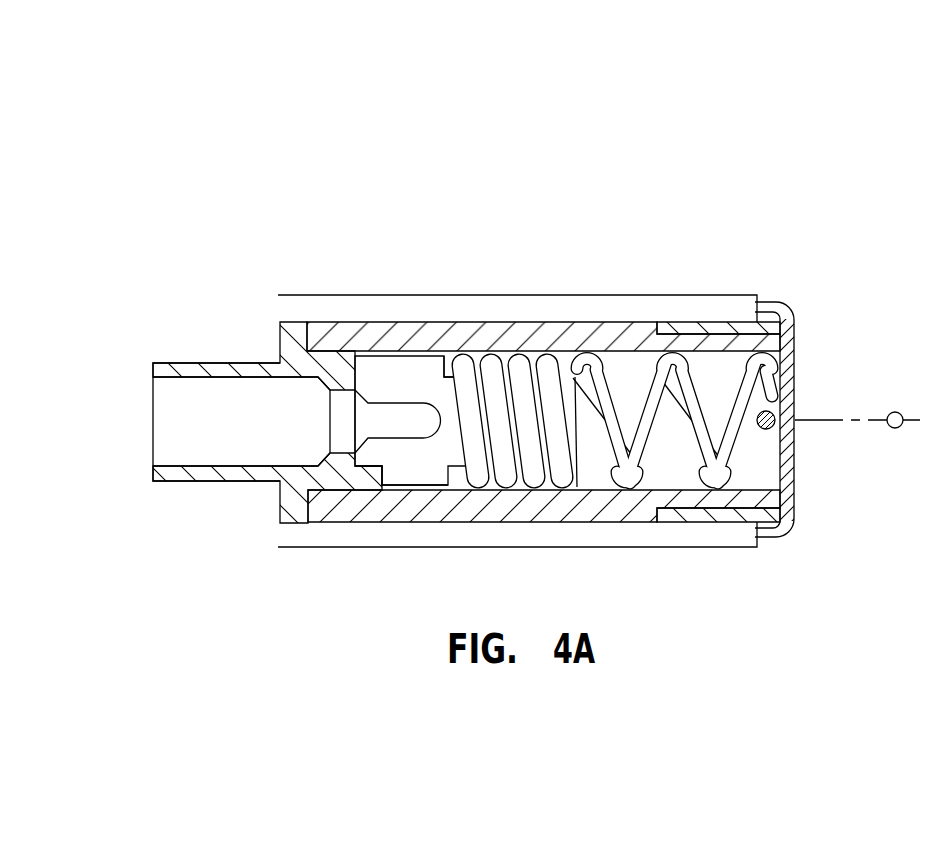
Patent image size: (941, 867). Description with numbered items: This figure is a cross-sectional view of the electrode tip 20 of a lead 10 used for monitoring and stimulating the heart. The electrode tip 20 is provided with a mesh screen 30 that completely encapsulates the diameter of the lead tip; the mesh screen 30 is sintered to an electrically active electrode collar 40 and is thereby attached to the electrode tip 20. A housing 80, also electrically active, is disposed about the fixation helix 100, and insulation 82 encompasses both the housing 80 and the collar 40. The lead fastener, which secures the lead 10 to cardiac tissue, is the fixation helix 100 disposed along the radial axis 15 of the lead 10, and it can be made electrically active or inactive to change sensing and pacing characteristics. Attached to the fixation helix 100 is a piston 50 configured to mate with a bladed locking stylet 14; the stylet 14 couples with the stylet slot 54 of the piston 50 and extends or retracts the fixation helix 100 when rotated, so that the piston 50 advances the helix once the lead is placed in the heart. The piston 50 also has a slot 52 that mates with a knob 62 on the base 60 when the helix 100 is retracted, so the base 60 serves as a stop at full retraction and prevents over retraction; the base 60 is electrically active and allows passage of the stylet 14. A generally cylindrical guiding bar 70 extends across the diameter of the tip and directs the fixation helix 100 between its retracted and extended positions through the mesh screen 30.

The lead 10 is at (318, 168).
The bladed locking stylet 14 is at (436, 385).
The radial axis 15 is at (893, 428).
The electrode tip 20 is at (749, 369).
The mesh screen 30 is at (788, 316).
The electrode collar 40 is at (767, 316).
The piston 50 is at (393, 425).
The slot 52 is at (386, 474).
The stylet slot 54 is at (428, 417).
The base 60 is at (302, 478).
The knob 62 is at (355, 477).
The guiding bar 70 is at (767, 432).
The housing 80 is at (540, 322).
The insulation 82 is at (502, 304).
The fixation helix 100 is at (538, 480).